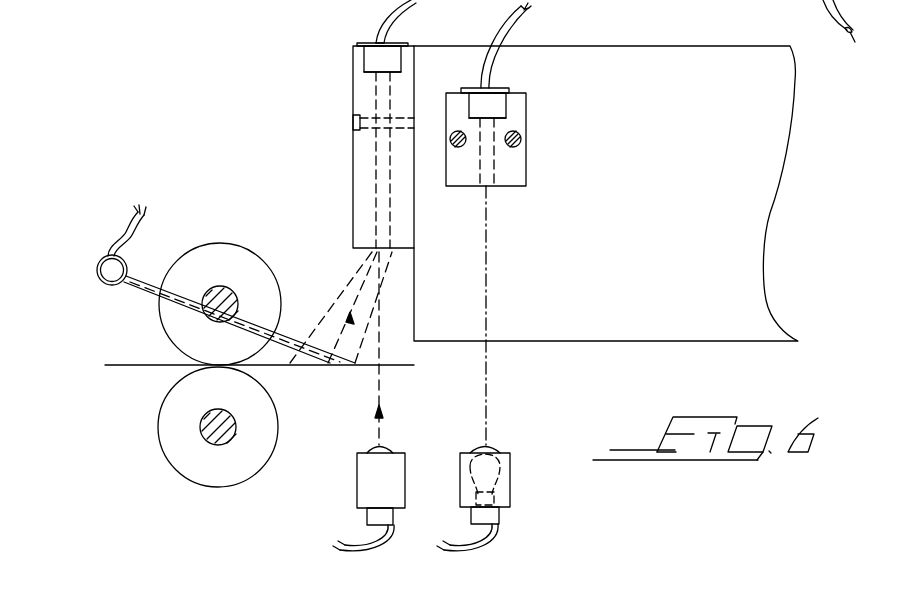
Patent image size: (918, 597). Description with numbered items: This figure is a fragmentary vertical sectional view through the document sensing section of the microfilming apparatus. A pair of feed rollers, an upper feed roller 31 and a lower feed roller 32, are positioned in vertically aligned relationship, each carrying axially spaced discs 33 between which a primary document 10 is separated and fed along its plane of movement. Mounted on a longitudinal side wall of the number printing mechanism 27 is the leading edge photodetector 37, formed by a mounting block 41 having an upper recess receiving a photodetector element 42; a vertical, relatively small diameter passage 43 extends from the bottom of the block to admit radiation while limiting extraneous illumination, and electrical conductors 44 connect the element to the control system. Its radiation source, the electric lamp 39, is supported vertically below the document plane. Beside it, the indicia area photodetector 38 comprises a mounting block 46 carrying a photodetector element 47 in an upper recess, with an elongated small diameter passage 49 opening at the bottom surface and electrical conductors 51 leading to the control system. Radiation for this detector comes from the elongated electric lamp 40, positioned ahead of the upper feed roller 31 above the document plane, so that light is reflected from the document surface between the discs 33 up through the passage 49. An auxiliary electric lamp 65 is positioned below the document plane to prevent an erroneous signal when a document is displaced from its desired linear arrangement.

The primary document 10 is at (119, 365).
The number printing mechanism 27 is at (540, 46).
The upper feed roller 31 is at (228, 288).
The lower feed roller 32 is at (200, 425).
The discs 33 is at (168, 324).
The leading edge photodetector 37 is at (529, 136).
The indicia area photodetector 38 is at (353, 107).
The electric lamp 39 is at (505, 492).
The elongated electric lamp 40 is at (98, 274).
The mounting block 41 is at (518, 181).
The photodetector element 42 is at (496, 88).
The passage 43 is at (495, 177).
The electrical conductors 44 is at (498, 35).
The mounting block 46 is at (352, 180).
The photodetector element 47 is at (404, 26).
The passage 49 is at (372, 218).
The electrical conductors 51 is at (377, 30).
The electric lamp 65 is at (356, 485).